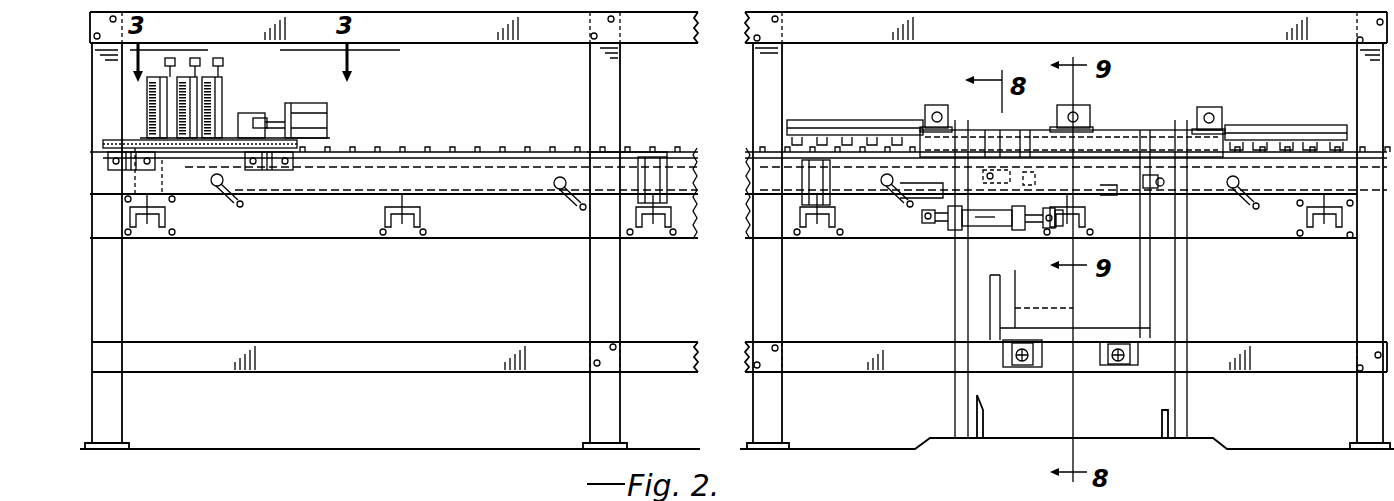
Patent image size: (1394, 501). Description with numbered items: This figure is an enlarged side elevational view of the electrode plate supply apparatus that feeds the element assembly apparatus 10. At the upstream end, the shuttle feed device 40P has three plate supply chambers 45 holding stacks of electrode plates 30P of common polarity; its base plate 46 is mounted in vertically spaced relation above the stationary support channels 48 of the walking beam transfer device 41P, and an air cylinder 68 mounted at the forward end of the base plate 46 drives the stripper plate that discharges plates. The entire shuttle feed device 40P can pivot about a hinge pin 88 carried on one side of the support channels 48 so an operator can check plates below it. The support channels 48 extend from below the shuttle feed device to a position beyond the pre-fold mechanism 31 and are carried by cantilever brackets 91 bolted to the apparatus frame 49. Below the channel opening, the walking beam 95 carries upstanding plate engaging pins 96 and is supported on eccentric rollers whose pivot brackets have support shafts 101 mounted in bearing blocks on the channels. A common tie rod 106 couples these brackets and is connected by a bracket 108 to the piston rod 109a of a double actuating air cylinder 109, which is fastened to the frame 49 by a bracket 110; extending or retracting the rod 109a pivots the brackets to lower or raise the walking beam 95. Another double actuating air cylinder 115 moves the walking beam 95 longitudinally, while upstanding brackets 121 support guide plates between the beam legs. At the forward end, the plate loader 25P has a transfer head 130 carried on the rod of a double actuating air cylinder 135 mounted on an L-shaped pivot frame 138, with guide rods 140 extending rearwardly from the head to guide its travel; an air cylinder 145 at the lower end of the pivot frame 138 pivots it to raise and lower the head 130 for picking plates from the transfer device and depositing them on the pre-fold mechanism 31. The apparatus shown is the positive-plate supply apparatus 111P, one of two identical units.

The element assembly apparatus 10 is at (483, 110).
The first plate loader 25P is at (1125, 129).
The electrode plates 30P is at (418, 150).
The pre-fold mechanism 31 is at (868, 102).
The shuttle feed device 40P is at (143, 108).
The walking beam transfer device 41P is at (515, 152).
The plate supply chambers 45 is at (165, 88).
The base plate 46 is at (275, 138).
The stationary support channels 48 is at (322, 183).
The frame 49 is at (213, 345).
The air cylinder 68 is at (313, 110).
The hinge pin 88 is at (137, 170).
The cantilever brackets 91 is at (170, 218).
The walking beam 95 is at (523, 169).
The electrode plate engaging pins 96 is at (627, 152).
The support shafts 101 is at (213, 190).
The tie rod 106 is at (593, 207).
The bracket 108 is at (945, 228).
The double actuating air cylinder 109 is at (995, 235).
The piston rod 109a is at (944, 232).
The bracket 110 is at (1035, 230).
The fixture 111P is at (268, 90).
The double actuating air cylinder 115 is at (1108, 205).
The upstanding brackets 121 is at (802, 183).
The transfer head 130 is at (1240, 127).
The double actuating air cylinder 135 is at (1075, 105).
The L-shaped pivot frame 138 is at (1150, 308).
The guide rods 140 is at (930, 105).
The air cylinder 145 is at (1113, 367).